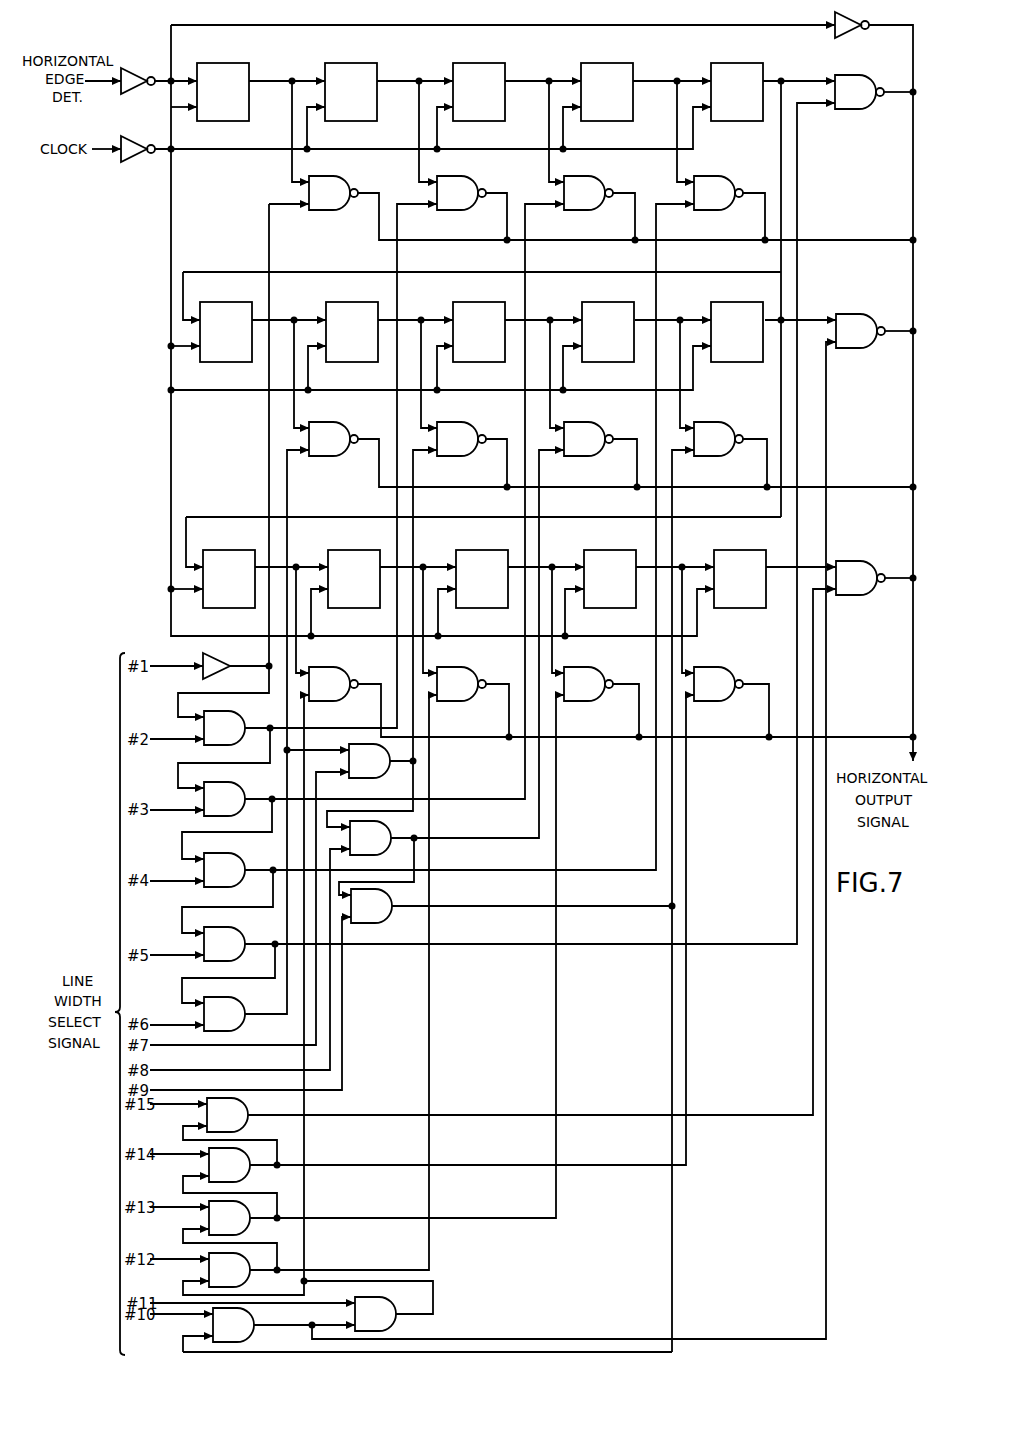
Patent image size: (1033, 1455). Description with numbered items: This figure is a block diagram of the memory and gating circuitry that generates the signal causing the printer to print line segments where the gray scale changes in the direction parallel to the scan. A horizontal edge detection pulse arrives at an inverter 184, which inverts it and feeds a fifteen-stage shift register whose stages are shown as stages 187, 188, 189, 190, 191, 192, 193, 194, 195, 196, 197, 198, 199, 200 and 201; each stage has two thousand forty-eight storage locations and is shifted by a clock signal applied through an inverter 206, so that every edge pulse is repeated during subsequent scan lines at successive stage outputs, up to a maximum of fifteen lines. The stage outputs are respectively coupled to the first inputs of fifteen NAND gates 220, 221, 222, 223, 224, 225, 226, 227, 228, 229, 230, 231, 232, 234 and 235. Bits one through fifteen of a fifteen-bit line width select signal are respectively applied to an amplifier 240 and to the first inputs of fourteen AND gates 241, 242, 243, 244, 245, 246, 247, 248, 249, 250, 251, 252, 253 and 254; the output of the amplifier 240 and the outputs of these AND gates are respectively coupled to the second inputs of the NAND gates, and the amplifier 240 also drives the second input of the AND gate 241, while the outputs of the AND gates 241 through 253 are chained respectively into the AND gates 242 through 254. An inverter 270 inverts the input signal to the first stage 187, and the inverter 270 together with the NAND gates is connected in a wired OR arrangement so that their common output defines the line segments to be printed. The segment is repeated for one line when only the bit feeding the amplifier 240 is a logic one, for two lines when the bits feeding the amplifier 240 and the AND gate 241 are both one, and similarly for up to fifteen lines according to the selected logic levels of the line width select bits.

The inverter 184 is at (141, 74).
The inverter 206 is at (141, 142).
The inverter 270 is at (860, 30).
The shift register stage 187 is at (235, 63).
The shift register stage 188 is at (367, 63).
The shift register stage 189 is at (484, 63).
The shift register stage 190 is at (620, 63).
The shift register stage 191 is at (736, 63).
The shift register stage 192 is at (227, 302).
The shift register stage 193 is at (353, 302).
The shift register stage 194 is at (479, 302).
The shift register stage 195 is at (612, 302).
The shift register stage 196 is at (742, 302).
The shift register stage 197 is at (228, 550).
The shift register stage 198 is at (353, 550).
The shift register stage 199 is at (481, 550).
The shift register stage 200 is at (606, 550).
The shift register stage 201 is at (737, 550).
The NAND gate 220 is at (345, 176).
The NAND gate 221 is at (472, 176).
The NAND gate 222 is at (598, 176).
The NAND gate 223 is at (723, 176).
The NAND gate 224 is at (850, 110).
The NAND gate 225 is at (329, 422).
The NAND gate 226 is at (456, 422).
The NAND gate 227 is at (590, 422).
The NAND gate 228 is at (715, 422).
The NAND gate 229 is at (846, 314).
The NAND gate 230 is at (343, 667).
The NAND gate 231 is at (470, 667).
The NAND gate 232 is at (595, 667).
The NAND gate 234 is at (721, 667).
The NAND gate 235 is at (858, 561).
The amplifier 240 is at (228, 660).
The AND gate 241 is at (234, 712).
The AND gate 242 is at (238, 783).
The AND gate 243 is at (238, 853).
The AND gate 244 is at (241, 928).
The AND gate 245 is at (239, 998).
The AND gate 246 is at (349, 745).
The AND gate 247 is at (386, 828).
The AND gate 248 is at (376, 928).
The AND gate 249 is at (252, 1343).
The AND gate 250 is at (394, 1335).
The AND gate 251 is at (242, 1289).
The AND gate 252 is at (242, 1237).
The AND gate 253 is at (242, 1184).
The AND gate 254 is at (249, 1110).